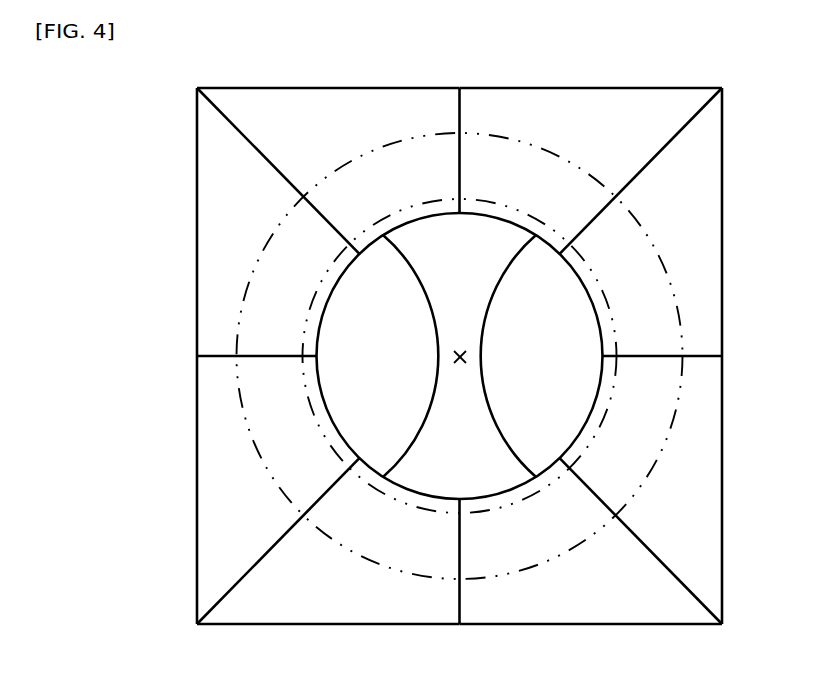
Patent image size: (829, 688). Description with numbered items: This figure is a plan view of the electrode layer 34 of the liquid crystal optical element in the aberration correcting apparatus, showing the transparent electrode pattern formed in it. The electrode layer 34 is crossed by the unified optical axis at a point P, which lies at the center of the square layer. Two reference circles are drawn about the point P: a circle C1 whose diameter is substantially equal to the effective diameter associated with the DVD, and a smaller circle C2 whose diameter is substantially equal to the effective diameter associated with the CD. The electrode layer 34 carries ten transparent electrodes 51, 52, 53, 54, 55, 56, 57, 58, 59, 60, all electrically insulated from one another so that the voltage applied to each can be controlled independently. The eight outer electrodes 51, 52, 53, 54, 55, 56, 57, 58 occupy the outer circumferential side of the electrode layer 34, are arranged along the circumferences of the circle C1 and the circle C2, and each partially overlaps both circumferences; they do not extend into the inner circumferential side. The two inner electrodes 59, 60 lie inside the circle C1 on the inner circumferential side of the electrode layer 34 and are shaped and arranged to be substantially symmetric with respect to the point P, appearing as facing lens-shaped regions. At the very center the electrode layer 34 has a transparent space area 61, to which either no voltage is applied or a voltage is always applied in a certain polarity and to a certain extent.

The electrode layer 34 is at (728, 80).
The transparent electrode 51 is at (313, 102).
The transparent electrode 52 is at (600, 102).
The transparent electrode 53 is at (713, 215).
The transparent electrode 54 is at (713, 558).
The transparent electrode 55 is at (604, 610).
The transparent electrode 56 is at (313, 610).
The transparent electrode 57 is at (203, 472).
The transparent electrode 58 is at (203, 222).
The transparent electrode 59 is at (344, 326).
The transparent electrode 60 is at (548, 323).
The space area 61 is at (476, 474).
The point P is at (459, 374).
The circle C1 is at (645, 478).
The circle C2 is at (606, 410).